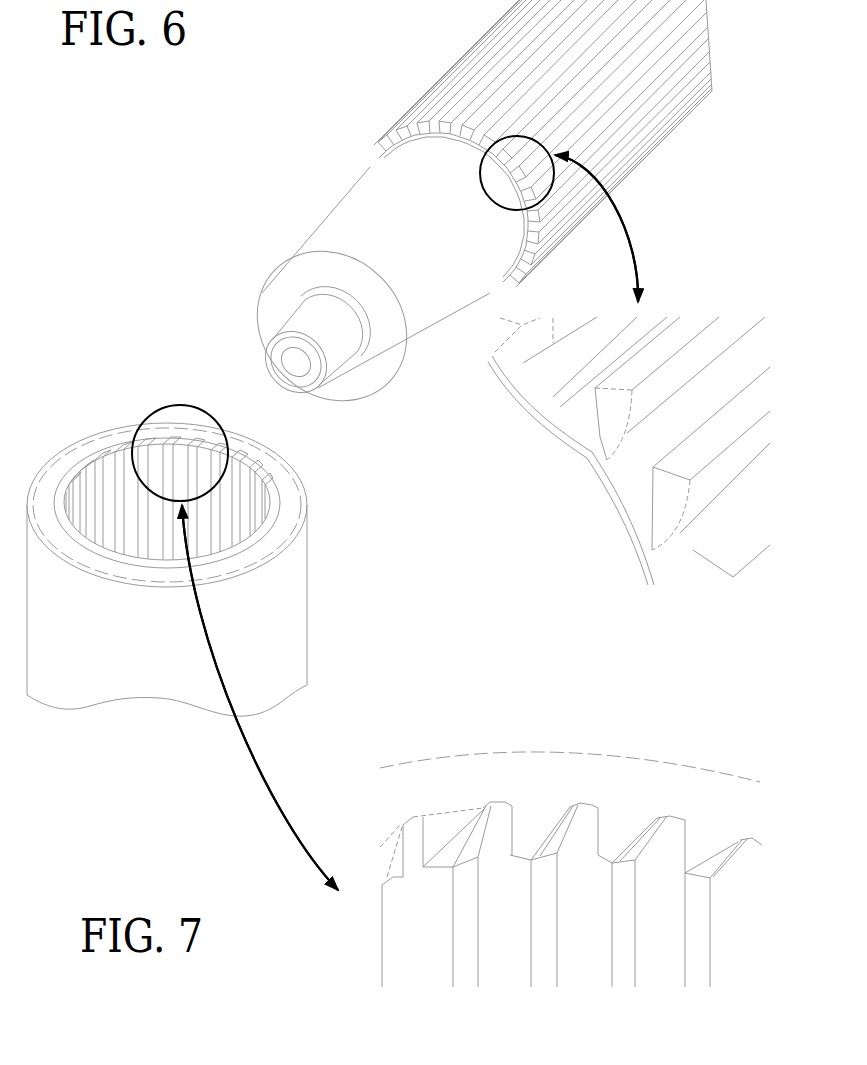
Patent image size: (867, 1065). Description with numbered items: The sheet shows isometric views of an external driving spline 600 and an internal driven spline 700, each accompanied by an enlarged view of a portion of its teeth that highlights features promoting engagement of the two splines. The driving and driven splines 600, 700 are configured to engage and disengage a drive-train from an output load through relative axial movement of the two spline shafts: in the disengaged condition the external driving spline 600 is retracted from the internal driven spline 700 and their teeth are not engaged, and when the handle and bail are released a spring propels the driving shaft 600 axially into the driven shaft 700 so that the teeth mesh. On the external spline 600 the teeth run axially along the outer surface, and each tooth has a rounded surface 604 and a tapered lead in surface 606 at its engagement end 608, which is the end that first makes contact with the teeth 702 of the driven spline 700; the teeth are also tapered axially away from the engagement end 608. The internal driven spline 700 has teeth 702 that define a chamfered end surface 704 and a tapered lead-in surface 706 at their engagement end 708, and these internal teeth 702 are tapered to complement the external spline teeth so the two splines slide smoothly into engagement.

In FIG. 6, the external driving spline 600 is at (431, 215).
In FIG. 6, the rounded surface 604 is at (614, 458).
In FIG. 6, the tapered lead in surface 606 is at (613, 430).
In FIG. 6, the engagement end 608 is at (388, 110).
In FIG. 7, the internal driven spline 700 is at (167, 572).
In FIG. 7, the teeth 702 is at (112, 477).
In FIG. 7, the chamfered end surface 704 is at (562, 833).
In FIG. 7, the tapered lead-in surface 706 is at (537, 845).
In FIG. 7, the engagement end 708 is at (355, 940).